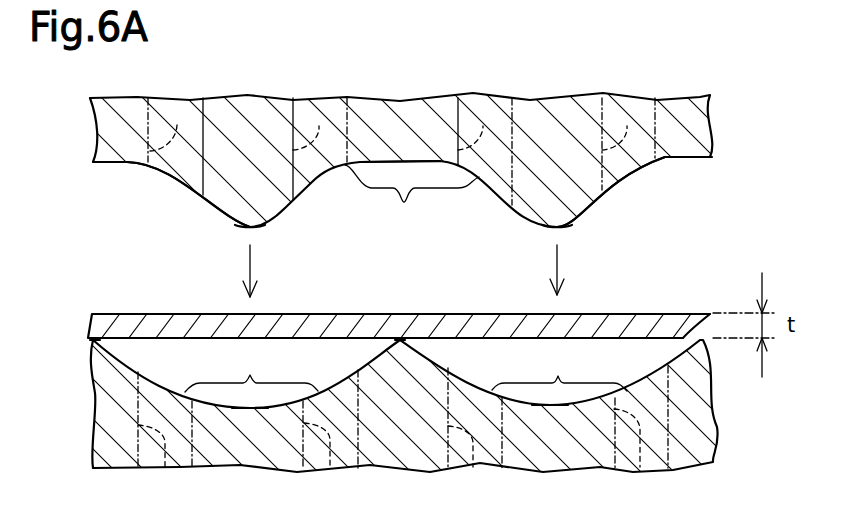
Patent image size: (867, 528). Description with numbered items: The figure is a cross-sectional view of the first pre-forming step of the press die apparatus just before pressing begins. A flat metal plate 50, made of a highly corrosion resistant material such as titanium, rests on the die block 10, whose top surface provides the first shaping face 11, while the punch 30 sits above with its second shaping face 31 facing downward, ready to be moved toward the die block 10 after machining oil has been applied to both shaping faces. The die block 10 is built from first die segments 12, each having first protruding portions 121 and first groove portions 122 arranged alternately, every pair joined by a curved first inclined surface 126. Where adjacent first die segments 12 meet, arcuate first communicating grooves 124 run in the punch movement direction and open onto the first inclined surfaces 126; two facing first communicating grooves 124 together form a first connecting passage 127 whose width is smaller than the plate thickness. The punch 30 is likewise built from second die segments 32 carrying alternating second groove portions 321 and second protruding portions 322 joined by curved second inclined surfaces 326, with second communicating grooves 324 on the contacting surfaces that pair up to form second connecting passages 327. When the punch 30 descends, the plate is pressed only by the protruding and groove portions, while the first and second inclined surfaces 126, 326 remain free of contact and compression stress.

The punch 30 is at (440, 163).
The second die segment 32 is at (712, 147).
The second shaping face 31 is at (690, 158).
The second groove portion 321 is at (128, 160).
The second protruding portion 322 is at (258, 228).
The second communicating groove 324 is at (401, 135).
The second inclined surface 326 is at (172, 181).
The second connecting passage 327 is at (176, 124).
The metal plate 50 is at (441, 313).
The first shaping face 11 is at (697, 313).
The die block 10 is at (422, 391).
The first die segment 12 is at (708, 423).
The first protruding portion 121 is at (93, 338).
The first groove portion 122 is at (268, 404).
The first communicating groove 124 is at (403, 444).
The first inclined surface 126 is at (406, 371).
The first connecting passage 127 is at (165, 468).